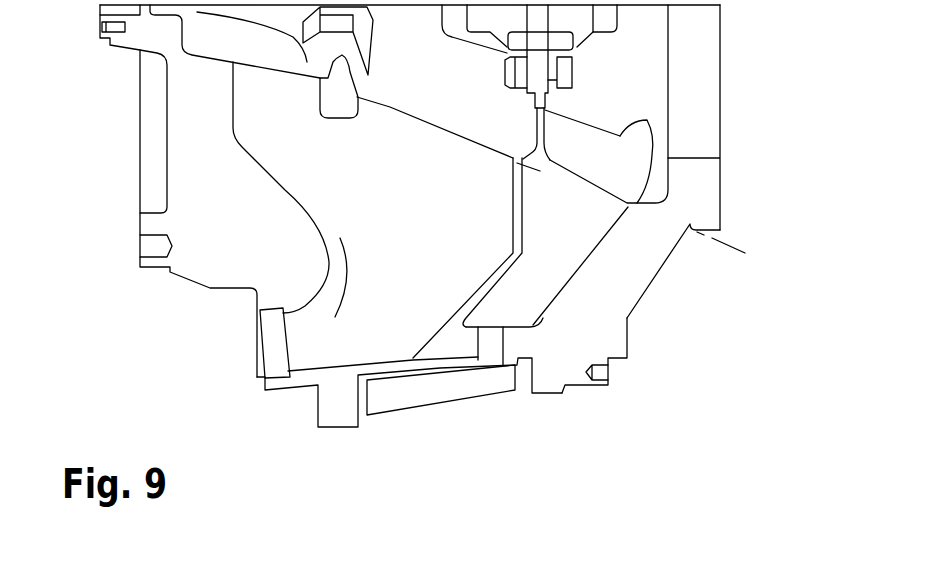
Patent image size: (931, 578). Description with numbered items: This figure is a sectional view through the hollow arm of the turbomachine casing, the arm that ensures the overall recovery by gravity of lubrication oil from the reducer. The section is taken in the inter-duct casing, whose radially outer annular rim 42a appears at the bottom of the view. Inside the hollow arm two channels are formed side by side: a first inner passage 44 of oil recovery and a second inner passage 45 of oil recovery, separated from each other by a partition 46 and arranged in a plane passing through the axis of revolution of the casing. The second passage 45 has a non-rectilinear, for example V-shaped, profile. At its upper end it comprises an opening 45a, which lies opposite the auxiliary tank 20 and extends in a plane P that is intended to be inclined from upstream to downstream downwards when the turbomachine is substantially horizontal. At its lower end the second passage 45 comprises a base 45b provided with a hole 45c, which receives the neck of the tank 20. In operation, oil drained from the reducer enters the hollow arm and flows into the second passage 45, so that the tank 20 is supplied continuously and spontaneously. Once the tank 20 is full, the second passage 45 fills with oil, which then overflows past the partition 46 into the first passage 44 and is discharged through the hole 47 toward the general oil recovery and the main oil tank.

The tank 20 is at (412, 387).
The radially outer annular rim 42a is at (338, 428).
The first inner passage of oil recovery 44 is at (307, 153).
The second inner passage of oil recovery 45 is at (555, 218).
The opening 45a is at (583, 178).
The base 45b is at (520, 336).
The hole 45c is at (490, 341).
The partition 46 is at (523, 238).
The hole 47 is at (257, 343).
The plane P is at (723, 236).